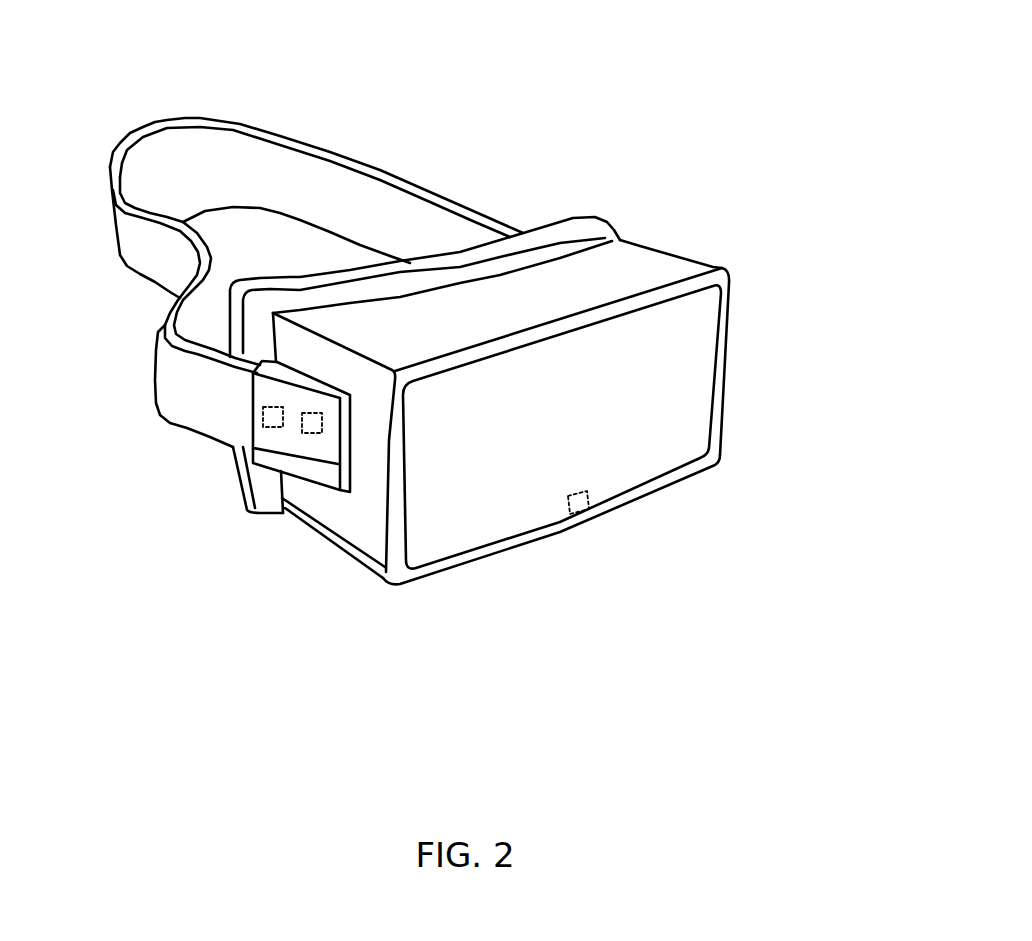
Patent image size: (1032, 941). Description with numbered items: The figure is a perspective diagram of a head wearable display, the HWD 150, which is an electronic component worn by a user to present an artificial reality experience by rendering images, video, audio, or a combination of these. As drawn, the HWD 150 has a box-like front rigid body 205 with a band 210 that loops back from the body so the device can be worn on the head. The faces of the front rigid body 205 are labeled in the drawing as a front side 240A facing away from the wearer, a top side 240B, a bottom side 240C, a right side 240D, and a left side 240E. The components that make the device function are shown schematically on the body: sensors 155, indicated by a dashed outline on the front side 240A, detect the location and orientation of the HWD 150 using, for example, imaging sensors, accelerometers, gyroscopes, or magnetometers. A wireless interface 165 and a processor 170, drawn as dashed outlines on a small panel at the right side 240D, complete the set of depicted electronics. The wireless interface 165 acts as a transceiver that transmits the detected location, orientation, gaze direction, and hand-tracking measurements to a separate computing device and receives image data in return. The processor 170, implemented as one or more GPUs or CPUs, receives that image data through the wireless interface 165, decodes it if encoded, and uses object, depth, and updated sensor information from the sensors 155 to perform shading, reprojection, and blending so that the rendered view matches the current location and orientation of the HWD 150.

The head wearable display 150 is at (35, 62).
The sensors 155 is at (583, 532).
The wireless interface 165 is at (238, 412).
The processor 170 is at (283, 443).
The front rigid body 205 is at (723, 268).
The band 210 is at (425, 185).
The front side 240A is at (562, 495).
The top side 240B is at (337, 317).
The bottom side 240C is at (303, 564).
The right side 240D is at (354, 530).
The left side 240E is at (705, 246).